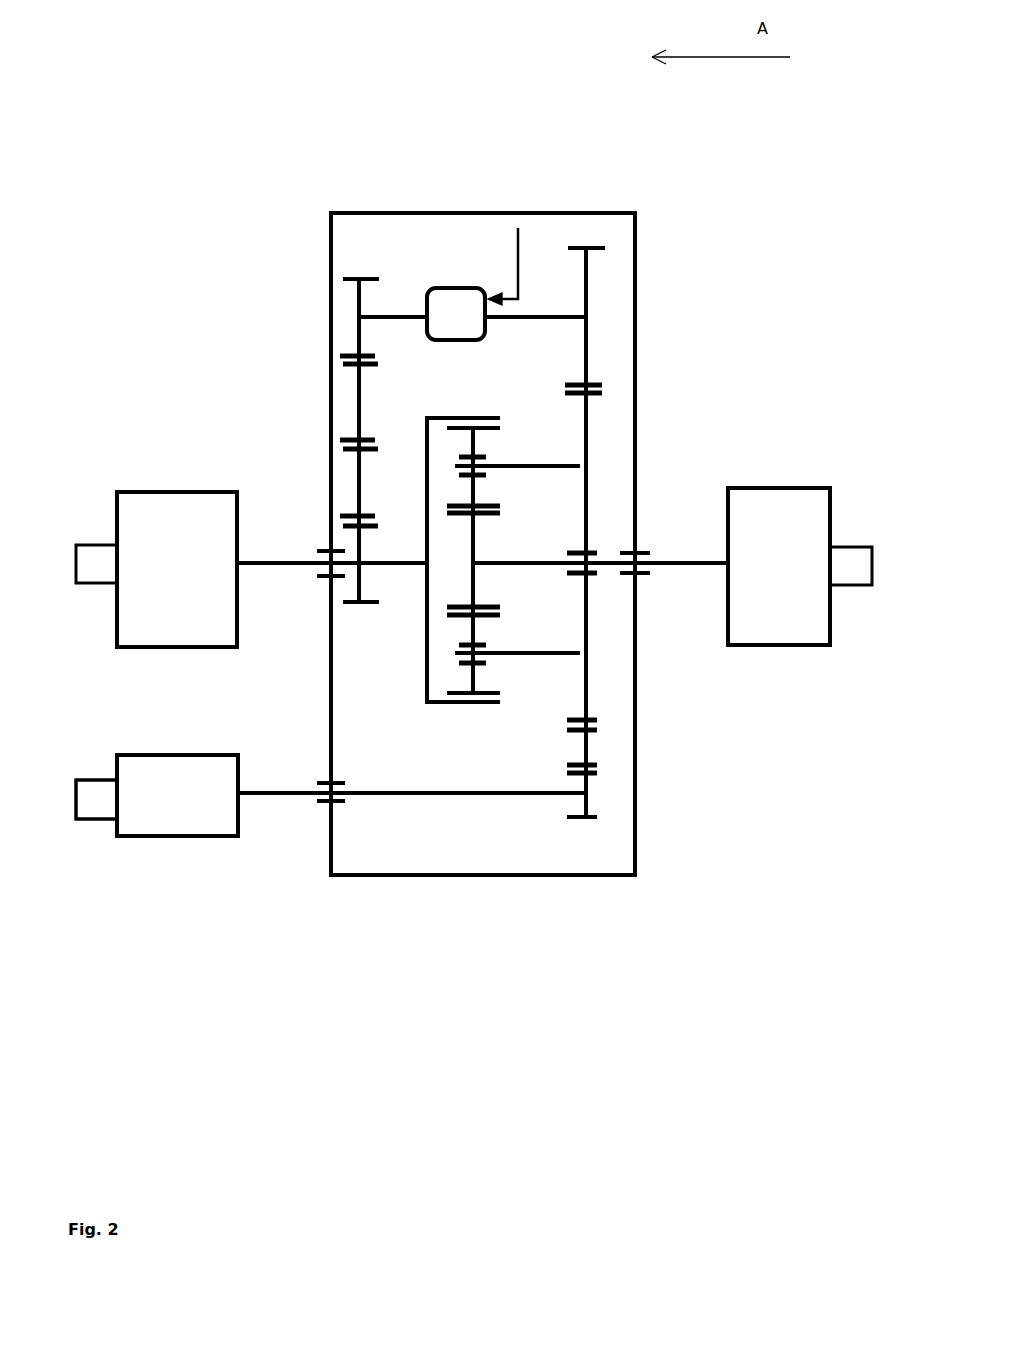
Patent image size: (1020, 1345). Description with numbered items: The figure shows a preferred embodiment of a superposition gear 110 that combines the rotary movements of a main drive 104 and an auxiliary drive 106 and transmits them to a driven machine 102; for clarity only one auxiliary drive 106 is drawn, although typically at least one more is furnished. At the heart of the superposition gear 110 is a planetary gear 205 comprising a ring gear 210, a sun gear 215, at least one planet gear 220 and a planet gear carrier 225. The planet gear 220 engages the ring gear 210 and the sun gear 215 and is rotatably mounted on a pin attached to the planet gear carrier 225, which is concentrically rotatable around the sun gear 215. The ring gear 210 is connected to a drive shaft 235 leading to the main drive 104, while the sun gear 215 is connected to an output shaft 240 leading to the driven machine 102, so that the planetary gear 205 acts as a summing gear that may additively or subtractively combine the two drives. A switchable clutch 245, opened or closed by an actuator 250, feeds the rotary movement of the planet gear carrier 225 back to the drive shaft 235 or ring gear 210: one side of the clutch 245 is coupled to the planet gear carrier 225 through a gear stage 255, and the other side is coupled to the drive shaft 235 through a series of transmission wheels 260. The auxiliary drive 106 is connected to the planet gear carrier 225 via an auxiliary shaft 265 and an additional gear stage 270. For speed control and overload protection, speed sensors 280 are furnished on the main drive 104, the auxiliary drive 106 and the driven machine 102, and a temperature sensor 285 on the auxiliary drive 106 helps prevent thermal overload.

The driven machine 102 is at (813, 488).
The main drive 104 is at (117, 503).
The first auxiliary drive 106 is at (203, 836).
The superposition gear 110 is at (468, 186).
The planetary gear 205 is at (445, 750).
The ring gear 210 is at (469, 544).
The sun gear 215 is at (477, 543).
The planet gear 220 is at (477, 443).
The planet gear carrier 225 is at (587, 705).
The drive shaft 235 is at (277, 563).
The output shaft 240 is at (673, 563).
The clutch 245 is at (460, 287).
The actuator 250 is at (520, 248).
The gear stage 255 is at (587, 297).
The transmission wheel 260 is at (360, 337).
The auxiliary shaft 265 is at (257, 793).
The gear stage 270 is at (587, 740).
The speed sensor 280 is at (92, 583).
The temperature sensor 285 is at (96, 799).